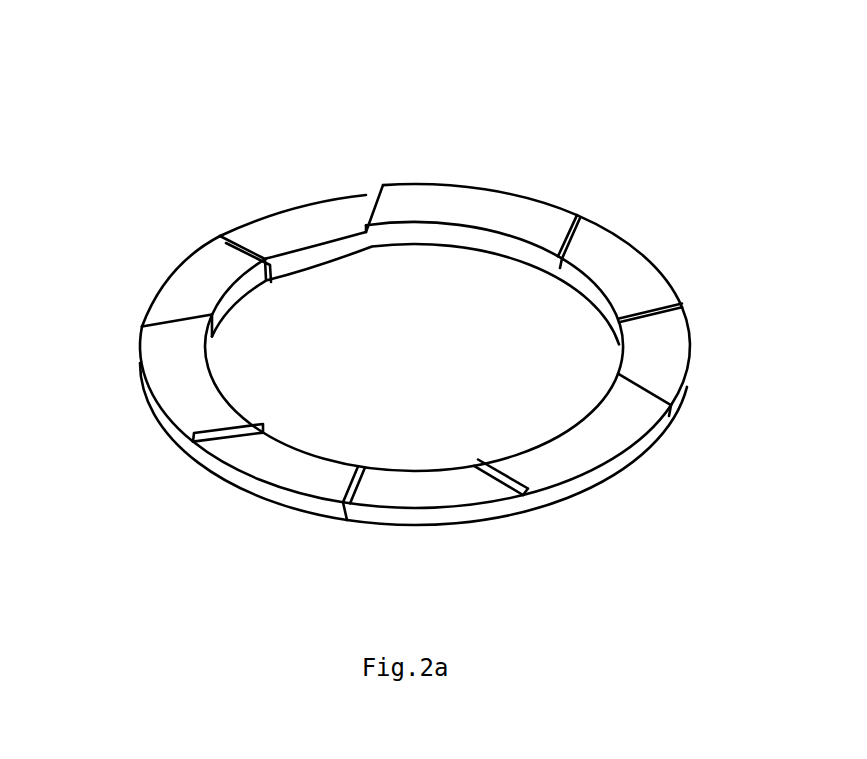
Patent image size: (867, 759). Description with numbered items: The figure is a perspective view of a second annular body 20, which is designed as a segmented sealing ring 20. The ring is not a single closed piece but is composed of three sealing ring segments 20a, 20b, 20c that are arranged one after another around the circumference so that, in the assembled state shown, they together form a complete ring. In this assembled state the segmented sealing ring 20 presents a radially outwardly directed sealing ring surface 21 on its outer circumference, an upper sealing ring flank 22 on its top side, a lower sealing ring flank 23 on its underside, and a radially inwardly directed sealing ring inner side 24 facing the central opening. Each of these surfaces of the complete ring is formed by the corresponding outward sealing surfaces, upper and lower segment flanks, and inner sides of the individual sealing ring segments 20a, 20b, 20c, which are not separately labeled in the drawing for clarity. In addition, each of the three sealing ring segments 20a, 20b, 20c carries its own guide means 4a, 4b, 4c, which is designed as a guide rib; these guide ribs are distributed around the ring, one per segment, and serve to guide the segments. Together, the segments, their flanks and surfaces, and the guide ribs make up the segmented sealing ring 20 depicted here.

The segmented sealing ring 20 is at (412, 318).
The sealing ring segment 20a is at (350, 213).
The sealing ring segment 20b is at (677, 360).
The sealing ring segment 20c is at (189, 286).
The guide means 4a is at (458, 204).
The guide means 4b is at (595, 447).
The guide means 4c is at (162, 362).
The sealing ring surface 21 is at (163, 423).
The upper sealing ring flank 22 is at (625, 273).
The lower sealing ring flank 23 is at (460, 527).
The sealing ring inner side 24 is at (325, 258).